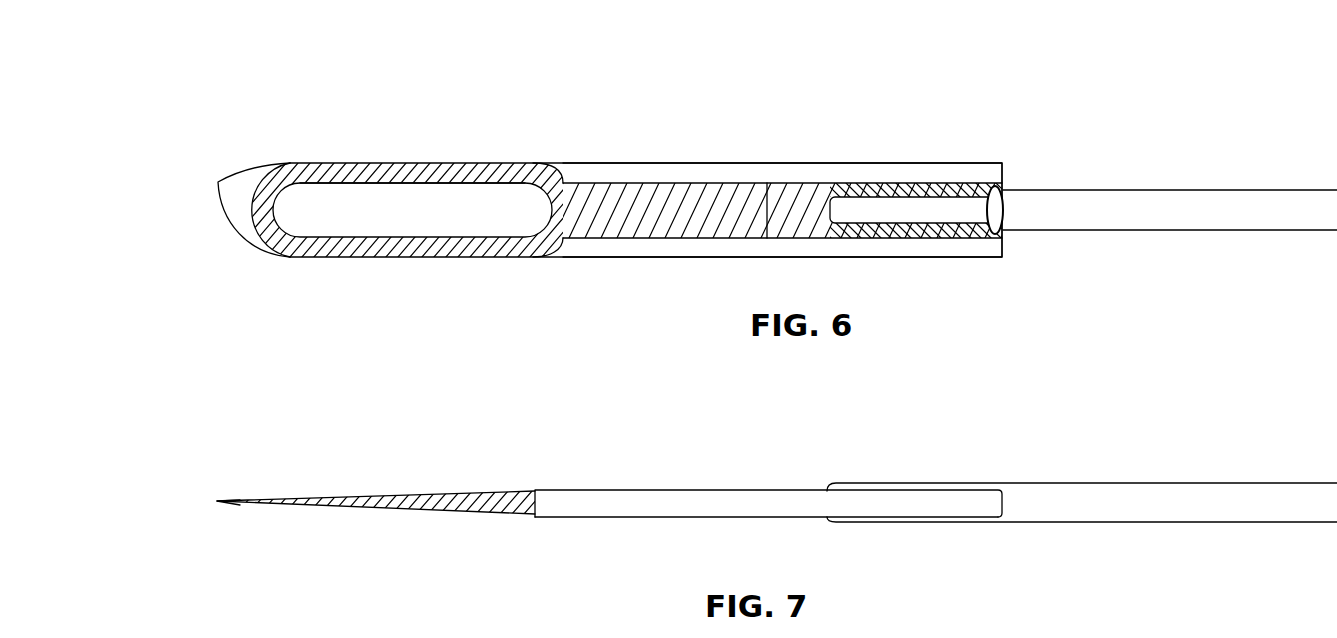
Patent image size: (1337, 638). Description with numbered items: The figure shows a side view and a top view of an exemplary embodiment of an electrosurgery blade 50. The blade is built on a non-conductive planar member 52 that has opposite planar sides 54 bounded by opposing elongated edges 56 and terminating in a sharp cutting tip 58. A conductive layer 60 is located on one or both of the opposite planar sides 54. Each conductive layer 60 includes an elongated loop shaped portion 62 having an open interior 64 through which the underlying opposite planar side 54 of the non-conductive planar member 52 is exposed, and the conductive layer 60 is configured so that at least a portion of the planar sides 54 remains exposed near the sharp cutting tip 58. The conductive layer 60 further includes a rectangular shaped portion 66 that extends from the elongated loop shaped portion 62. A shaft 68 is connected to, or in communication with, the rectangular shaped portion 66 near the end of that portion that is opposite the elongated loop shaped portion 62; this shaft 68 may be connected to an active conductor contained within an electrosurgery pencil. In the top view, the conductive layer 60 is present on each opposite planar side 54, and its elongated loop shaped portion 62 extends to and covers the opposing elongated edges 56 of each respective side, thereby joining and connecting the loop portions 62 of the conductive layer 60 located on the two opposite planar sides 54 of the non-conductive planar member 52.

In FIG. 6, the electrosurgery blade 50 is at (800, 95).
In FIG. 6, the non-conductive planar member 52 is at (595, 190).
In FIG. 7, the non-conductive planar member 52 is at (658, 500).
In FIG. 6, the opposite planar sides 54 is at (500, 226).
In FIG. 6, the opposing elongated edges 56 is at (720, 163).
In FIG. 7, the opposing elongated edges 56 is at (784, 513).
In FIG. 6, the sharp cutting tip 58 is at (217, 182).
In FIG. 7, the sharp cutting tip 58 is at (215, 501).
In FIG. 6, the conductive layer 60 is at (567, 225).
In FIG. 7, the conductive layer 60 is at (478, 497).
In FIG. 6, the elongated loop shaped portion 62 is at (420, 248).
In FIG. 7, the elongated loop shaped portion 62 is at (374, 496).
In FIG. 6, the open interior 64 is at (440, 198).
In FIG. 6, the rectangular shaped portion 66 is at (745, 215).
In FIG. 6, the shaft 68 is at (1090, 205).
In FIG. 7, the shaft 68 is at (1077, 503).